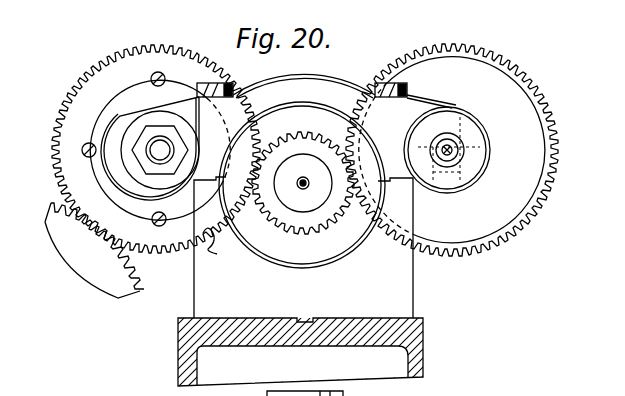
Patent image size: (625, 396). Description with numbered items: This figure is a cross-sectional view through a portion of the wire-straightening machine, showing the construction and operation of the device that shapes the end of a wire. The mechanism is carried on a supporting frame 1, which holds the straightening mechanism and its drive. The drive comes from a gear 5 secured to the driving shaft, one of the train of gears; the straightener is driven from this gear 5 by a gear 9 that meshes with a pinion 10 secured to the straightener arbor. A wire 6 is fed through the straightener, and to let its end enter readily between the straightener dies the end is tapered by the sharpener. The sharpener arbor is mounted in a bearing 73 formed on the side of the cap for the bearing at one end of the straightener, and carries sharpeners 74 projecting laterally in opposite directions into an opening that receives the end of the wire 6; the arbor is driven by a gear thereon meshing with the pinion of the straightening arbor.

The supporting frame 1 is at (408, 330).
The gear 5 is at (116, 271).
The wire 6 is at (306, 189).
The gear 9 is at (210, 244).
The pinion 10 is at (302, 185).
The bearing 73 is at (479, 172).
The sharpeners 74 is at (488, 150).